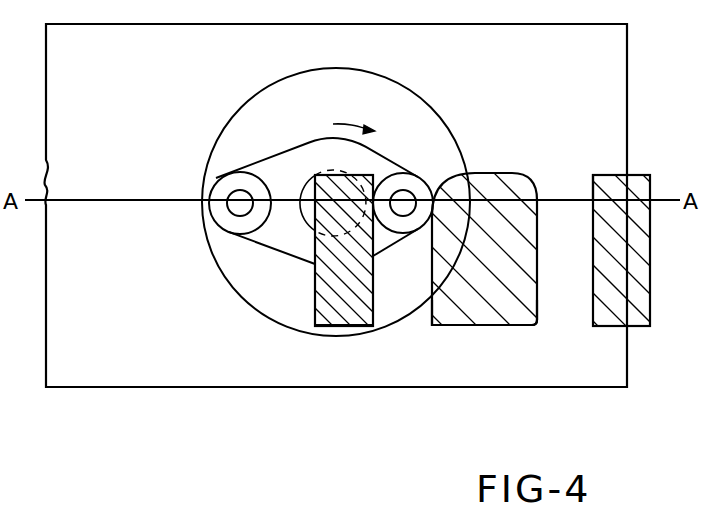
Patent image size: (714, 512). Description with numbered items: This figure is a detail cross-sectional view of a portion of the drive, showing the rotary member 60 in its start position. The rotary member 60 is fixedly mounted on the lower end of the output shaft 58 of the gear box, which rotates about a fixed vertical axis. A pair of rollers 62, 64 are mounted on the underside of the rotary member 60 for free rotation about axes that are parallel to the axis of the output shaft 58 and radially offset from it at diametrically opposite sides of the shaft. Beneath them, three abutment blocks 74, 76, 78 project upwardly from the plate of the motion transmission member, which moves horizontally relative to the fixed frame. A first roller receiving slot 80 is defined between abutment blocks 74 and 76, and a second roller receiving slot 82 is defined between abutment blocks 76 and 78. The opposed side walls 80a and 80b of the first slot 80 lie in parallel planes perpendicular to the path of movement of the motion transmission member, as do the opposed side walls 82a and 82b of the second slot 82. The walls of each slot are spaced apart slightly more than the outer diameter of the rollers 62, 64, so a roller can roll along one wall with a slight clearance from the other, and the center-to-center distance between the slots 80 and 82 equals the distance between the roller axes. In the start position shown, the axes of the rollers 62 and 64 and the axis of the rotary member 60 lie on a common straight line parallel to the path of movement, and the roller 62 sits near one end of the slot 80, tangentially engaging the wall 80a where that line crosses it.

The output shaft 58 is at (298, 232).
The rotary member 60 is at (314, 153).
The roller 62 is at (411, 186).
The roller 64 is at (232, 188).
The abutment block 74 is at (313, 318).
The abutment block 76 is at (477, 318).
The abutment block 78 is at (610, 330).
The first roller receiving slot 80 is at (407, 285).
The side wall of slot 80 80a is at (374, 304).
The side wall of slot 80 80b is at (424, 315).
The second roller receiving slot 82 is at (571, 268).
The side wall of slot 82 82a is at (546, 316).
The side wall of slot 82 82b is at (593, 178).